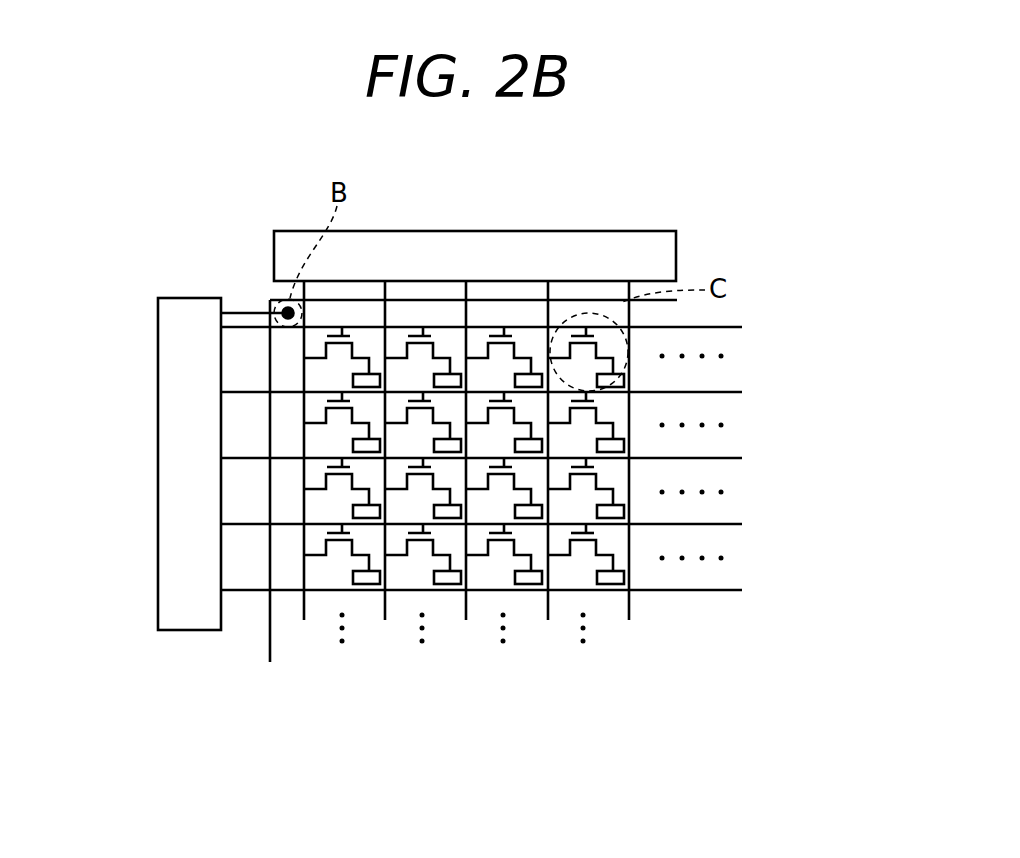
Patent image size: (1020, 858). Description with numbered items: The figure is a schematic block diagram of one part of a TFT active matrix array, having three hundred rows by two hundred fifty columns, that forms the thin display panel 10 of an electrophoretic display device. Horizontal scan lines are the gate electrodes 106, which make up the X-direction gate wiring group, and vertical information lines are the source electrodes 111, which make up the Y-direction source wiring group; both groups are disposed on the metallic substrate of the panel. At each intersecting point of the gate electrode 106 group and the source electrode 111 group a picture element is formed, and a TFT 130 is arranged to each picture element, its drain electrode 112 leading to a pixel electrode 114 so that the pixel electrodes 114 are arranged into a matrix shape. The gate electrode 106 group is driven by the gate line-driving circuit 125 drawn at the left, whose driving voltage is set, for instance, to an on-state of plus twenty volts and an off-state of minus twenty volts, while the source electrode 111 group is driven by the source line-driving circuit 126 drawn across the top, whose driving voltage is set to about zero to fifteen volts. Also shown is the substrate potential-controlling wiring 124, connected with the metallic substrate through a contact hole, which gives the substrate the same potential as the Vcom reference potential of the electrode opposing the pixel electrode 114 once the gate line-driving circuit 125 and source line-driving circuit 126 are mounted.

The thin display panel 10 is at (662, 614).
The gate electrode 106 is at (712, 327).
The source electrode 111 is at (303, 608).
The drain electrode 112 is at (615, 357).
The pixel electrode 114 is at (608, 447).
The substrate potential-controlling wiring 124 is at (250, 312).
The gate line-driving circuit 125 is at (178, 360).
The source line-driving circuit 126 is at (520, 255).
The TFT 130 is at (610, 533).